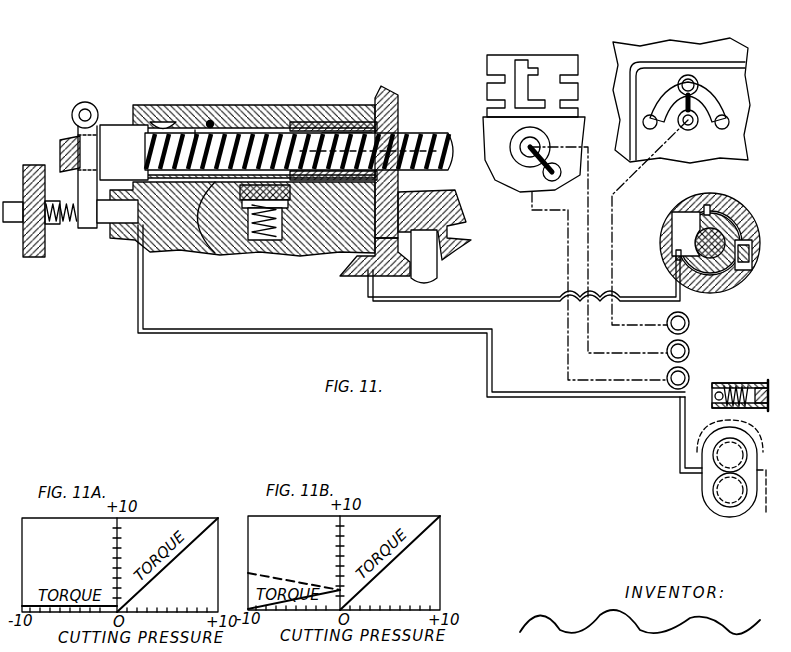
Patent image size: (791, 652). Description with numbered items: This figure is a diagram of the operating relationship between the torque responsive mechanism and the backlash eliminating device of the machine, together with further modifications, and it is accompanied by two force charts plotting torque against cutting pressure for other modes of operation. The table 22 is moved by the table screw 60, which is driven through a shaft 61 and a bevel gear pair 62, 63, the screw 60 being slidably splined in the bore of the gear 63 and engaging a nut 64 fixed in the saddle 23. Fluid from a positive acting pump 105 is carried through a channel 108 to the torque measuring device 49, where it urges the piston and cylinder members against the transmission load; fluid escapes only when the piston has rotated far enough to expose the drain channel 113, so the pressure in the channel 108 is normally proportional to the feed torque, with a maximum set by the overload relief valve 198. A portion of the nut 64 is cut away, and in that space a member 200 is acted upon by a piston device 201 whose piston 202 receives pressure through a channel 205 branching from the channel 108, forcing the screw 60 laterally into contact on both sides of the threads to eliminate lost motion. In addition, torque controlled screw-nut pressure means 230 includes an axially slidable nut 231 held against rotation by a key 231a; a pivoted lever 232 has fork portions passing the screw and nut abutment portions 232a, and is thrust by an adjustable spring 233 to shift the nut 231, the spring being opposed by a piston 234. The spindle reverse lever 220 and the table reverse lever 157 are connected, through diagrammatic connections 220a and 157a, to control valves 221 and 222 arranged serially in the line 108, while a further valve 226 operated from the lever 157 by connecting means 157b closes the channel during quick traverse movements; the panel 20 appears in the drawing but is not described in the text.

The control panel 20 is at (680, 42).
The table 22 is at (545, 55).
The saddle 23 is at (498, 142).
The torque measuring device 49 is at (738, 198).
The table screw 60 is at (420, 135).
The shaft 61 is at (440, 272).
The bevel gear 62 is at (440, 192).
The bevel gear 63 is at (380, 90).
The nut 64 is at (288, 122).
The pump 105 is at (700, 490).
The channel 108 is at (680, 443).
The drain channel 113 is at (700, 210).
The table reverse lever 157 is at (525, 160).
The connection 157a is at (588, 245).
The connecting means 157b is at (560, 228).
The overload relief valve 198 is at (722, 384).
The member 200 is at (205, 254).
The piston device 201 is at (282, 212).
The piston 202 is at (244, 205).
The channel 205 is at (520, 302).
The spindle reverse lever 220 is at (665, 96).
The connection 220a is at (616, 212).
The control valve 221 is at (692, 318).
The control valve 222 is at (692, 347).
The valve 226 is at (692, 374).
The screw-nut pressure means 230 is at (88, 232).
The axially slidable nut 231 is at (212, 125).
The key 231a is at (166, 124).
The pivoted lever 232 is at (75, 110).
The nut abutment portion 232a is at (60, 150).
The adjustable spring 233 is at (62, 225).
The piston 234 is at (128, 226).